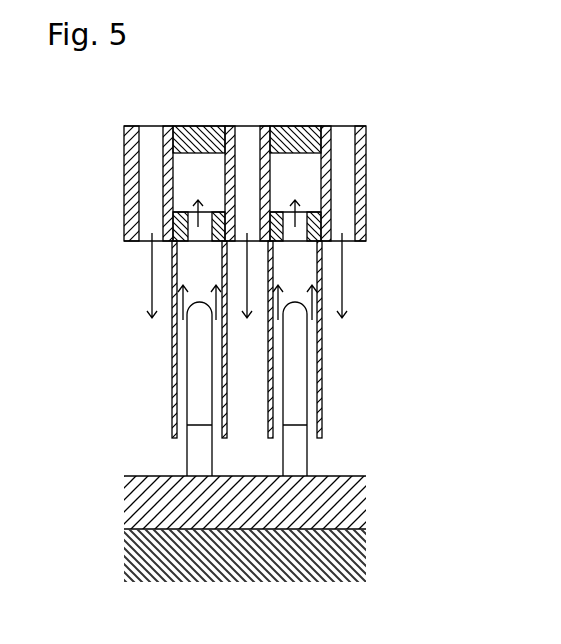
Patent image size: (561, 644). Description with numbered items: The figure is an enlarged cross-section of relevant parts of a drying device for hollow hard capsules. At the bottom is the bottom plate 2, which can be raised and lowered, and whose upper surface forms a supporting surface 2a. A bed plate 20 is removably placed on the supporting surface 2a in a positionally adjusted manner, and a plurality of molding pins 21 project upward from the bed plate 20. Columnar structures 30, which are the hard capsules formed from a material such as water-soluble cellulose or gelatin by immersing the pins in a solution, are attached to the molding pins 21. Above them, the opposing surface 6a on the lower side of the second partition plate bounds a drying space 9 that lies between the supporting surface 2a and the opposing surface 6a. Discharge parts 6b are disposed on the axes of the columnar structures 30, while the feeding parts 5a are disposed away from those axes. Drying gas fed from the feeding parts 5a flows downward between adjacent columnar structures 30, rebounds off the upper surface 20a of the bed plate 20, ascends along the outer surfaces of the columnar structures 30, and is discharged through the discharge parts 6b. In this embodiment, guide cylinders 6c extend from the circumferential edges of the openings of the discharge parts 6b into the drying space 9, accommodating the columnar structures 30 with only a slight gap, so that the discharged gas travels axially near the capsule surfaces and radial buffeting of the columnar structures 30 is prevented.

The feeding part 5a is at (133, 170).
The opposing surface 6a is at (128, 240).
The discharge part 6b is at (207, 215).
The guide cylinder 6c is at (173, 393).
The columnar structure 30 is at (205, 365).
The molding pin 21 is at (283, 464).
The drying space 9 is at (254, 418).
The upper surface of the bed plate 20a is at (332, 476).
The bed plate 20 is at (347, 498).
The supporting surface 2a is at (149, 529).
The bottom plate 2 is at (355, 558).